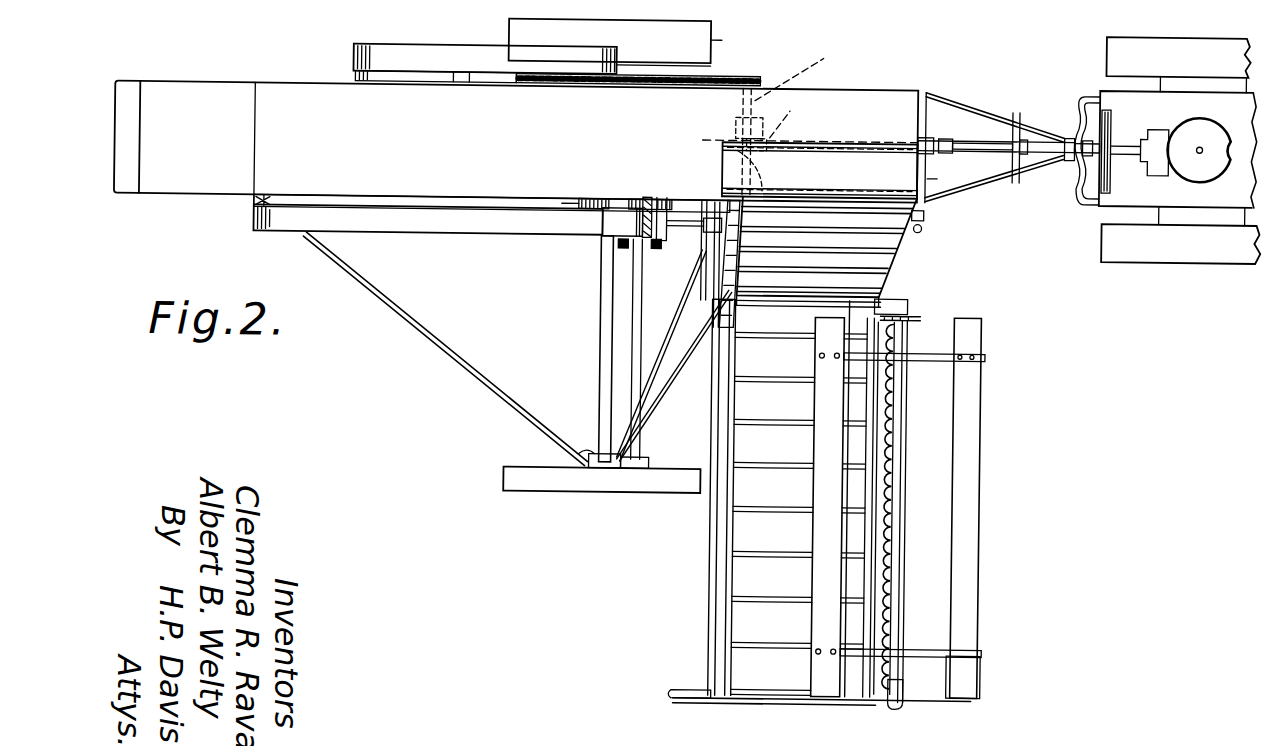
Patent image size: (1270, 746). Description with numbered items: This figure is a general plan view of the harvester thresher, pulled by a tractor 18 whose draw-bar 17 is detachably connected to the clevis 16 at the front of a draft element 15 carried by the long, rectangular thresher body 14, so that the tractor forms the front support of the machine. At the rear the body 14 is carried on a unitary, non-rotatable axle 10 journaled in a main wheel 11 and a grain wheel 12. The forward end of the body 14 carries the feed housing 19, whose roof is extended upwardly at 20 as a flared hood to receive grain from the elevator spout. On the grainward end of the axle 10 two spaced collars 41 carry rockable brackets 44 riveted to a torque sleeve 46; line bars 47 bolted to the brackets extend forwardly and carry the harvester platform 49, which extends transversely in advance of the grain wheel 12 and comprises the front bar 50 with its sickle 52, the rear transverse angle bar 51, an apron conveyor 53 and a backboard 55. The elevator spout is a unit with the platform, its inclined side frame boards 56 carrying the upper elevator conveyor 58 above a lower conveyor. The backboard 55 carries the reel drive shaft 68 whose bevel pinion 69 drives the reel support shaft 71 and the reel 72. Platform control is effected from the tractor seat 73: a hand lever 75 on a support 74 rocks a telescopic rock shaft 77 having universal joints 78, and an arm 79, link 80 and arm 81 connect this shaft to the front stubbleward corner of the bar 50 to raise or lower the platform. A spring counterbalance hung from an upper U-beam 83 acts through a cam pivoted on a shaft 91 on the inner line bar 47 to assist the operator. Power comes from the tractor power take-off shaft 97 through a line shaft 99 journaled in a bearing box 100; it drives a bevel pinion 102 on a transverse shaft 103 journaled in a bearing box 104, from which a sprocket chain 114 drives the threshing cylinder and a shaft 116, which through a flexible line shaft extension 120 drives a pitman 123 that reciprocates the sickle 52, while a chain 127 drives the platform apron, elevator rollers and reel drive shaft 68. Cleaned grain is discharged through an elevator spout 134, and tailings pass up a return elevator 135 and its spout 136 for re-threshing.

The axle 10 is at (628, 66).
The main wheel 11 is at (718, 42).
The grain wheel 12 is at (548, 494).
The thresher body 14 is at (305, 92).
The draft element 15 is at (990, 115).
The clevis 16 is at (1062, 150).
The draw-bar 17 is at (1085, 200).
The tractor 18 is at (1152, 205).
The feed housing 19 is at (900, 100).
The flared hood 20 is at (720, 170).
The collars 41 is at (592, 455).
The brackets 44 is at (612, 470).
The torque sleeve 46 is at (600, 298).
The line bars 47 is at (700, 236).
The harvester platform 49 is at (712, 605).
The bar 50 is at (895, 595).
The transverse angle bar 51 is at (893, 480).
The sickle 52 is at (893, 412).
The apron conveyor 53 is at (748, 533).
The backboard 55 is at (718, 635).
The side frame boards 56 is at (922, 212).
The upper elevator conveyor 58 is at (800, 275).
The reel drive shaft 68 is at (745, 320).
The bevel pinion 69 is at (895, 305).
The reel support shaft 71 is at (907, 530).
The reel 72 is at (981, 378).
The seat 73 is at (1193, 176).
The support 74 is at (1108, 130).
The hand lever 75 is at (1082, 135).
The rock shaft 77 is at (1075, 150).
The universal joints 78 is at (945, 138).
The arm 79 is at (935, 176).
The link 80 is at (930, 218).
The arm 81 is at (914, 230).
The upper U-beam 83 is at (617, 238).
The shaft 91 is at (632, 320).
The power take-off shaft 97 is at (1130, 152).
The line shaft 99 is at (980, 140).
The bearing box 100 is at (770, 160).
The bevel pinion 102 is at (733, 128).
The transverse shaft 103 is at (787, 110).
The bearing box 104 is at (733, 140).
The sprocket chain 114 is at (560, 205).
The shaft 116 is at (596, 200).
The flexible line shaft extension 120 is at (700, 250).
The pitman 123 is at (885, 285).
The chain 127 is at (735, 310).
The elevator spout 134 is at (466, 55).
The return elevator 135 is at (462, 228).
The spout 136 is at (628, 204).